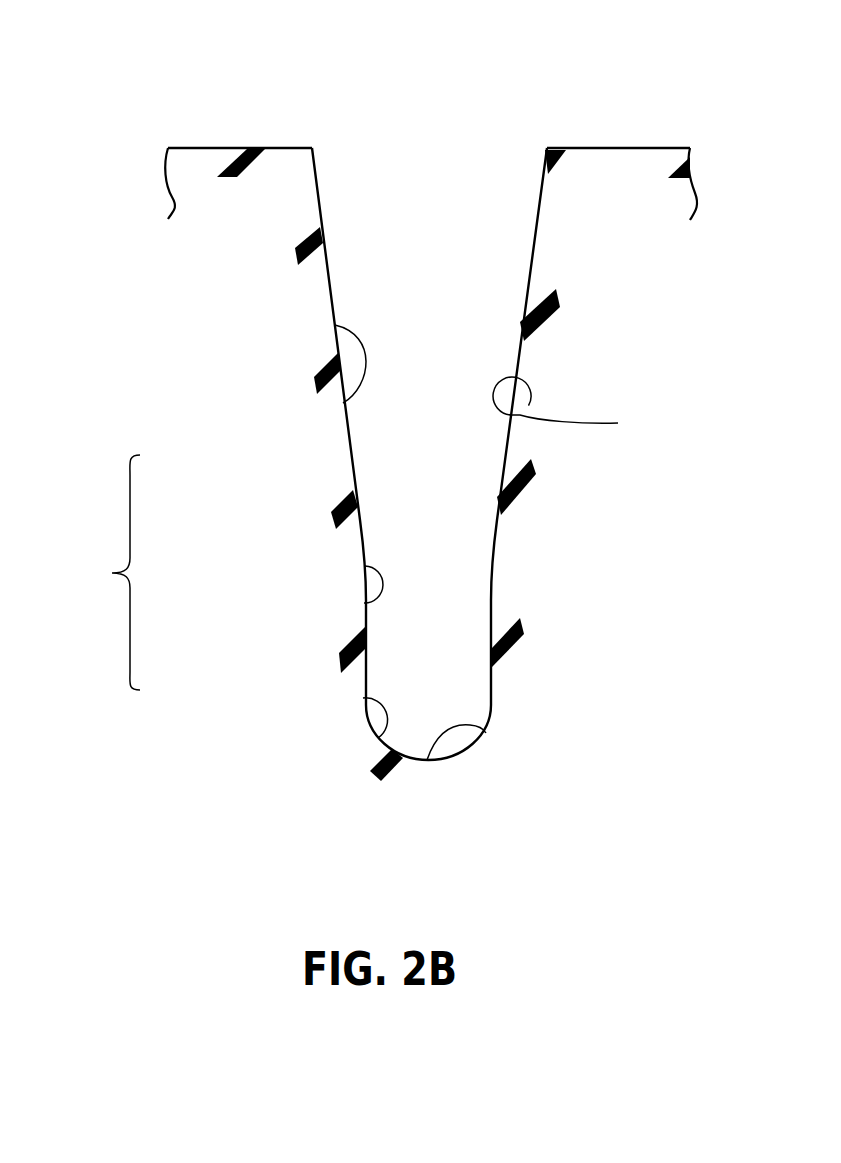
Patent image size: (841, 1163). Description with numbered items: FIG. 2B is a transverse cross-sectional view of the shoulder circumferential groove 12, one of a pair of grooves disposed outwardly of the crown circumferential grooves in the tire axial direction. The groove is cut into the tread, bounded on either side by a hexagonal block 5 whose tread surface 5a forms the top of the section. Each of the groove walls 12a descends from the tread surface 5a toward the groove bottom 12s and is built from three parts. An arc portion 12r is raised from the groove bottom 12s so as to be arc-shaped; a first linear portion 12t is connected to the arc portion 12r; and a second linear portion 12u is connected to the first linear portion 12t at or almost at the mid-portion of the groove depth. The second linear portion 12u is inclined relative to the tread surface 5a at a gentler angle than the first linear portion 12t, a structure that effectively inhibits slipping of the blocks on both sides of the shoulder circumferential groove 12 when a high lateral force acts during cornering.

The hexagonal block 5 is at (616, 130).
The tread surface 5a is at (212, 147).
The shoulder circumferential groove 12 is at (452, 292).
The groove wall 12a is at (366, 533).
The second linear portion 12u is at (343, 403).
The first linear portion 12t is at (364, 603).
The arc portion 12r is at (363, 698).
The groove bottom 12s is at (485, 733).